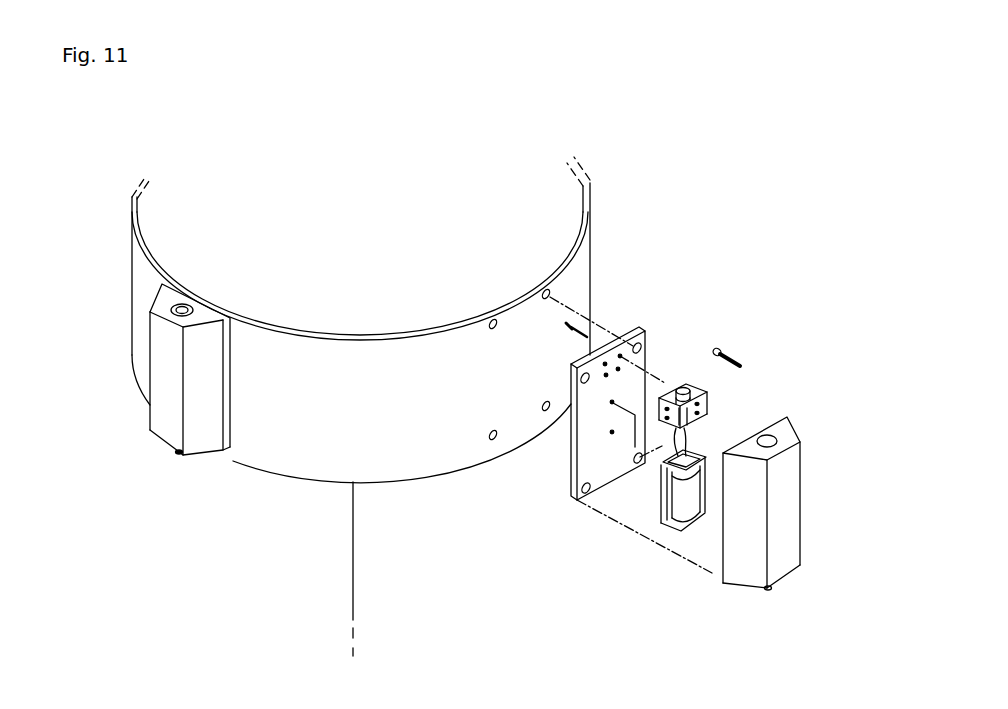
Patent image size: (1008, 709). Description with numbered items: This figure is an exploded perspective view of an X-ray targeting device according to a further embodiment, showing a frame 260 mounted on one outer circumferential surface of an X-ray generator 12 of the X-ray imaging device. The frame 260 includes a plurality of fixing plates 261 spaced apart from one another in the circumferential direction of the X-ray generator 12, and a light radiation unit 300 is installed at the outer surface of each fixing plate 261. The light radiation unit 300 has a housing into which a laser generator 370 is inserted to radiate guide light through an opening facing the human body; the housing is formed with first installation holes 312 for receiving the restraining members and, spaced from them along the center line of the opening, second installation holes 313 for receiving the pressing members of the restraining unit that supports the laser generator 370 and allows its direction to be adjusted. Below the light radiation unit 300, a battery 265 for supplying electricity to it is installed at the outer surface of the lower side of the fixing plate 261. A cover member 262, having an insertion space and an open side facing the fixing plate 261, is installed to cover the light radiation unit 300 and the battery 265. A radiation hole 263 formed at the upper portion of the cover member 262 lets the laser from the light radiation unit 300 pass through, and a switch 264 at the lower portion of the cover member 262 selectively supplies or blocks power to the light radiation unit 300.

The X-ray generator 12 is at (553, 213).
The frame 260 is at (141, 334).
The fixing plate 261 is at (640, 331).
The cover member 262 is at (203, 435).
The radiation hole 263 is at (772, 442).
The switch 264 is at (178, 454).
The battery 265 is at (672, 526).
The light radiation unit 300 is at (724, 395).
The first installation hole 312 is at (679, 392).
The second installation hole 313 is at (643, 427).
The laser generator 370 is at (689, 382).